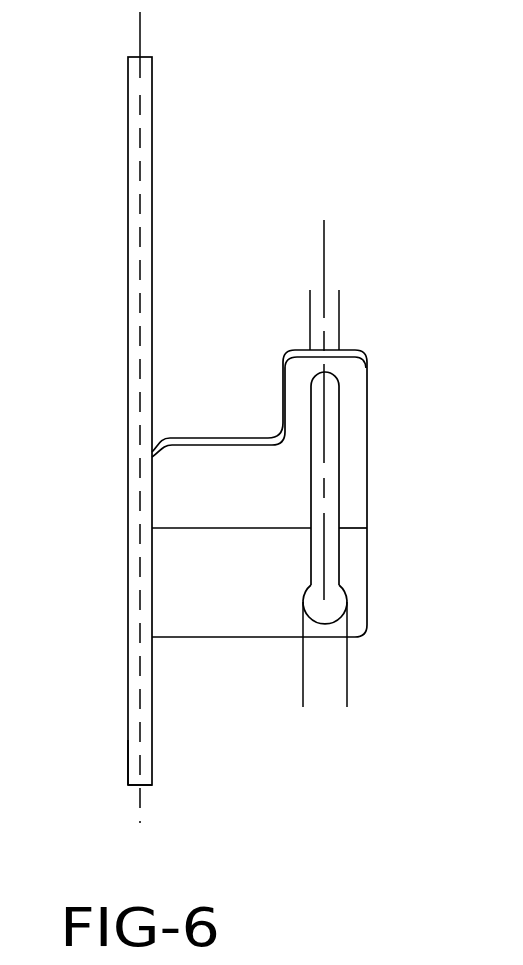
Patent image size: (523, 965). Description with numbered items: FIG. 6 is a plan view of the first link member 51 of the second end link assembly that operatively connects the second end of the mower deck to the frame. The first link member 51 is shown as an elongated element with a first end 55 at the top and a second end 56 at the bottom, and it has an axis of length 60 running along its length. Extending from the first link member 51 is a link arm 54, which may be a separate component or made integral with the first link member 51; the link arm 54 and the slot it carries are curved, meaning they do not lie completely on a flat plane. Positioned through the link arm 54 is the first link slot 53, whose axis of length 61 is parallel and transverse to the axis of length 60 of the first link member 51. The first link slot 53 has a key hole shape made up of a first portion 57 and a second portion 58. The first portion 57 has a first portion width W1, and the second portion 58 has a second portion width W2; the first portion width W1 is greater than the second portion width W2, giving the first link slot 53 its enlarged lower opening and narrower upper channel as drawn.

The first link member 51 is at (252, 493).
The first link slot 53 is at (372, 478).
The link arm 54 is at (212, 458).
The first end 55 is at (128, 105).
The second end 56 is at (129, 765).
The first portion 57 is at (333, 598).
The second portion 58 is at (330, 412).
The axis of length 60 is at (140, 32).
The axis of length 61 is at (324, 252).
The first portion width W1 is at (253, 682).
The second portion width W2 is at (258, 315).